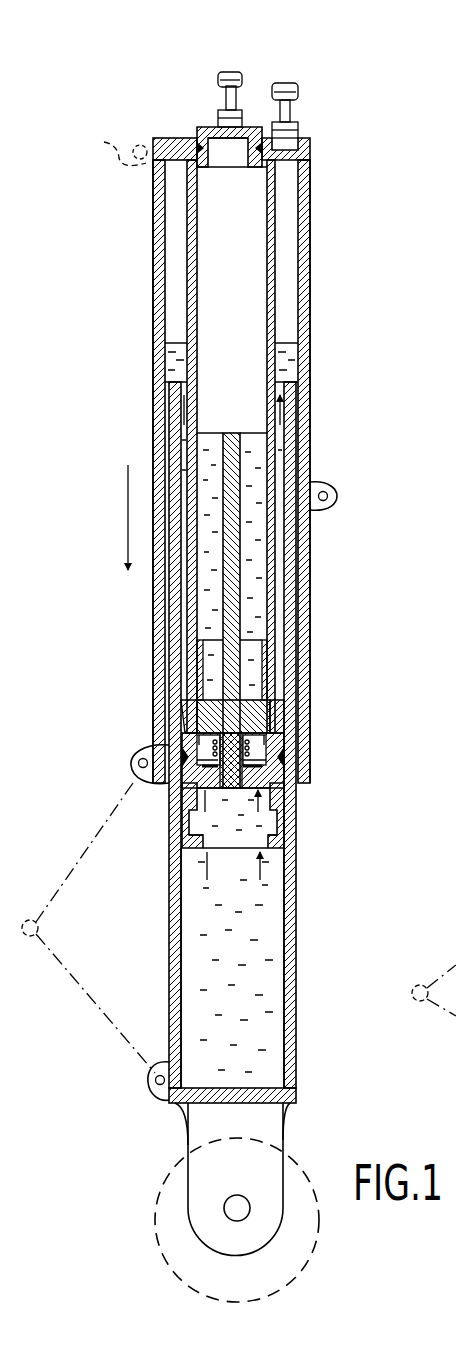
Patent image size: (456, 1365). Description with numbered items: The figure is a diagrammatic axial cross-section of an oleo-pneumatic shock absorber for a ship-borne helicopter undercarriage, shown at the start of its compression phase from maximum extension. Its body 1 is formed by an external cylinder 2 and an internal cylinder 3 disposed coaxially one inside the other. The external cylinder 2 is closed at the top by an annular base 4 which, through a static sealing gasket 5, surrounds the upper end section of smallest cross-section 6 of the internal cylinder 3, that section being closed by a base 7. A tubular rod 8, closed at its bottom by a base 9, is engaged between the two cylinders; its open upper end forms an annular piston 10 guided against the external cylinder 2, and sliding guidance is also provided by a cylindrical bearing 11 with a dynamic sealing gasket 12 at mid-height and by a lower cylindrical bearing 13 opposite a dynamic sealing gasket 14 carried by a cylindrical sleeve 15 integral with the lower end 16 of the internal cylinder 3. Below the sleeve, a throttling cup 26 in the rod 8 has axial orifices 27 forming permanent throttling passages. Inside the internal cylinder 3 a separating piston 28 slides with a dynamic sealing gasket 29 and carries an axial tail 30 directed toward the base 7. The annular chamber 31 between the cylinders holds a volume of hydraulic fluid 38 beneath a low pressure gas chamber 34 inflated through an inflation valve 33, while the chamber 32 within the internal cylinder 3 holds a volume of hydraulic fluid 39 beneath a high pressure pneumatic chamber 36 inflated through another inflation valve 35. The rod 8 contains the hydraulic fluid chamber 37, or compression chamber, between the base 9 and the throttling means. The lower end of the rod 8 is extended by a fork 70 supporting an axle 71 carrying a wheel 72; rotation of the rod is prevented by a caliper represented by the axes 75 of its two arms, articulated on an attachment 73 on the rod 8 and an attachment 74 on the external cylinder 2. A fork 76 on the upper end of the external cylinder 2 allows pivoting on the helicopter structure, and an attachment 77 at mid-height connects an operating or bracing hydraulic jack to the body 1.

The body 1 is at (150, 298).
The external cylinder 2 is at (158, 235).
The internal cylinder 3 is at (272, 310).
The annular base 4 is at (168, 140).
The static sealing gasket 5 is at (194, 138).
The upper end section of smallest cross-section 6 is at (212, 135).
The base 7 is at (253, 135).
The rod 8 is at (290, 978).
The base 9 is at (252, 1098).
The annular piston 10 is at (290, 390).
The cylindrical bearing 11 is at (300, 432).
The dynamic sealing gasket 12 is at (302, 440).
The cylindrical bearing 13 is at (288, 775).
The dynamic sealing gasket 14 is at (290, 757).
The cylindrical sleeve 15 is at (283, 795).
The lower end of the internal cylinder 16 is at (276, 718).
The throttling cup 26 is at (276, 843).
The axial orifices 27 is at (202, 848).
The separating piston 28 is at (212, 718).
The dynamic sealing gasket 29 is at (200, 703).
The axial tail 30 is at (232, 525).
The annular chamber 31 is at (180, 327).
The chamber 32 is at (213, 485).
The inflation valve 33 is at (290, 84).
The low pressure gas chamber 34 is at (288, 205).
The inflation valve 35 is at (231, 72).
The high pressure pneumatic chamber 36 is at (232, 250).
The hydraulic fluid chamber 37 is at (205, 1005).
The volume of hydraulic fluid 38 is at (185, 512).
The volume of hydraulic fluid 39 is at (258, 575).
The fork 70 is at (210, 1150).
The axle 71 is at (224, 1208).
The wheel 72 is at (156, 1265).
The attachment 73 is at (150, 1082).
The attachment 74 is at (132, 763).
The axes of the caliper arms 75 is at (75, 945).
The fork 76 is at (104, 142).
The attachment 77 is at (337, 496).